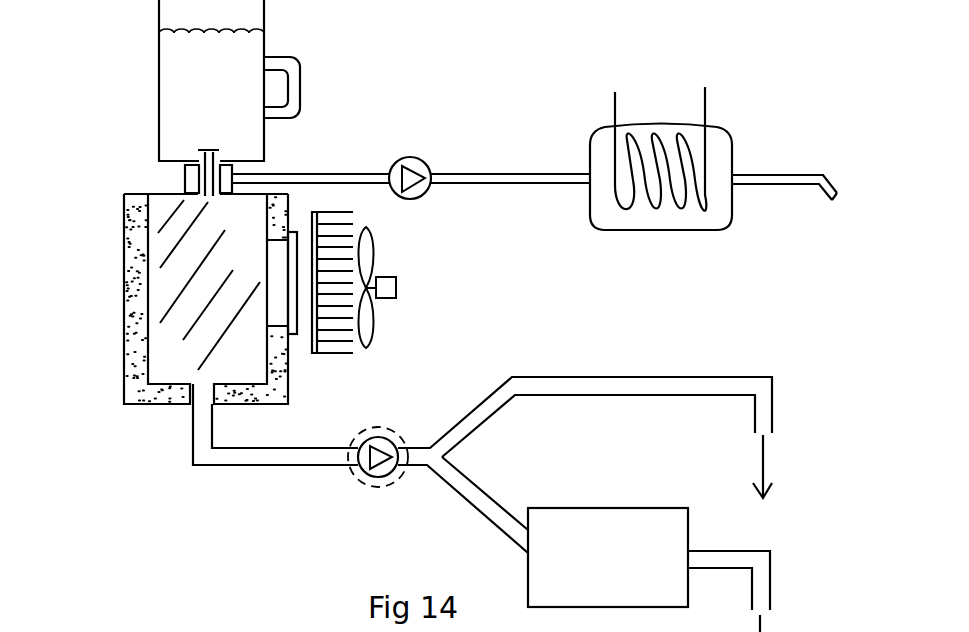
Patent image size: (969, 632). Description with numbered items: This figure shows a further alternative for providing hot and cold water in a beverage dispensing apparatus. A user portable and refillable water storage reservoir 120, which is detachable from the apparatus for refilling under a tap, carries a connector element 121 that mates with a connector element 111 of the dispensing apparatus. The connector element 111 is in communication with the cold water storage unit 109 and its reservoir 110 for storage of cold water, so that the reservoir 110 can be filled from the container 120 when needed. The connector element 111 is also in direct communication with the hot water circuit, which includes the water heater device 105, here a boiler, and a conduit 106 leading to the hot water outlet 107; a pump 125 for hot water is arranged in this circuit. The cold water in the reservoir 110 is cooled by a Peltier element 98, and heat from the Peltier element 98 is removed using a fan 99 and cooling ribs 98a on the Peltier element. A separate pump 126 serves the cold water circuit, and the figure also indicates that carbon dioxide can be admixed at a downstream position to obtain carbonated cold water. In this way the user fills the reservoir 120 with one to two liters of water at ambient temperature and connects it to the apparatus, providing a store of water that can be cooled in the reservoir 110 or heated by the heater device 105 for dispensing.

The user refillable water storage reservoir 120 is at (175, 110).
The connector element 121 is at (182, 173).
The mating connector element 111 is at (183, 183).
The cold water storage unit 109 is at (114, 289).
The reservoir for storage of cold water 110 is at (176, 358).
The Peltier element 98 is at (290, 337).
The cooling ribs 98a is at (340, 362).
The fan 99 is at (388, 245).
The pump 125 is at (428, 146).
The water heater device 105 is at (680, 88).
The conduit 106 is at (753, 175).
The outlet 107 is at (836, 200).
The pump 126 is at (369, 515).